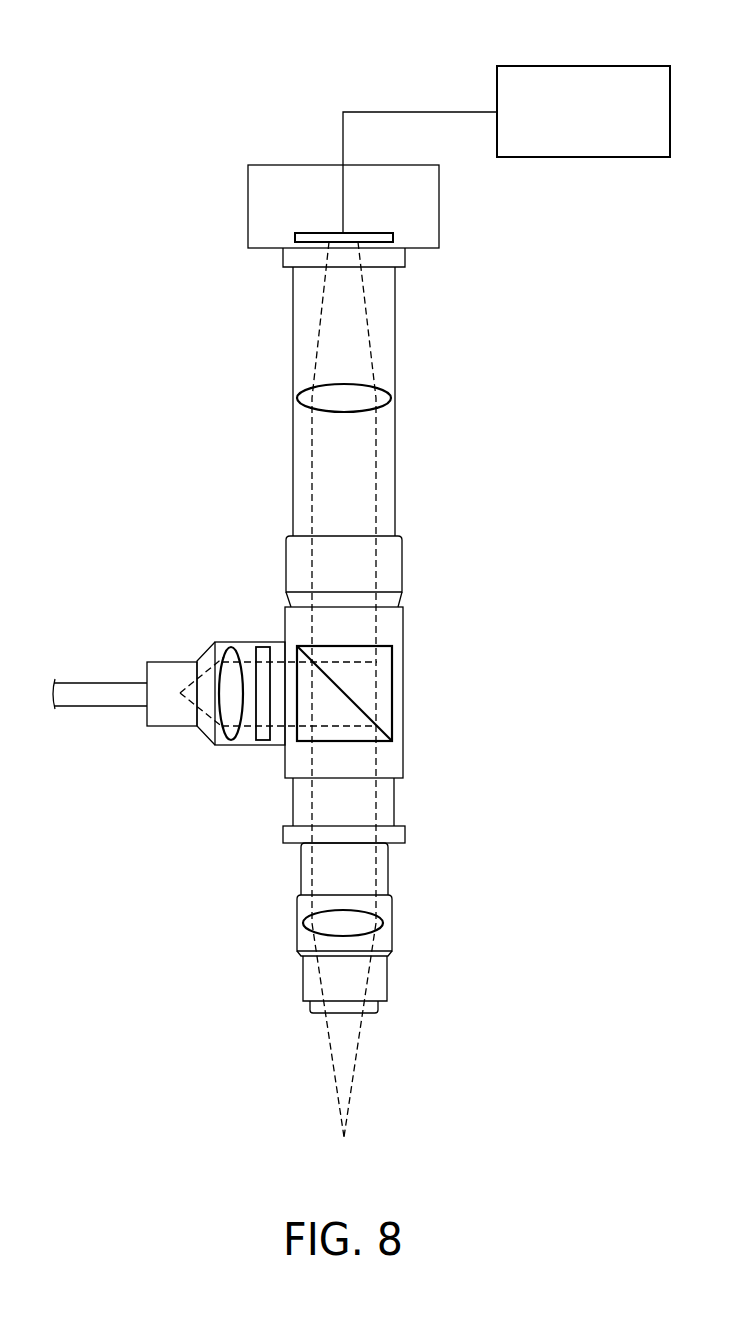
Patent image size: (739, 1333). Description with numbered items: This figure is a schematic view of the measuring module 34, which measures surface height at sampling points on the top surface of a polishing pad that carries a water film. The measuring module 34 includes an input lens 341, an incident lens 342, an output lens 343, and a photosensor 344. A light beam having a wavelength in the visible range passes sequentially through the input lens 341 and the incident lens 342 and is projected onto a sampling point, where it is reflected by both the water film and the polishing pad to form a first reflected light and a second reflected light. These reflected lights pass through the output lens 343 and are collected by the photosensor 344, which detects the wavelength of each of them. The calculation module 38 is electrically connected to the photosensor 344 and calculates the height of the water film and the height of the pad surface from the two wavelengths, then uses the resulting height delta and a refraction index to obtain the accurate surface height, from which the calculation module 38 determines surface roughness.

The calculation module 38 is at (593, 66).
The measuring module 34 is at (293, 478).
The input lens 341 is at (230, 647).
The incident lens 342 is at (383, 924).
The output lens 343 is at (297, 398).
The photosensor 344 is at (312, 235).